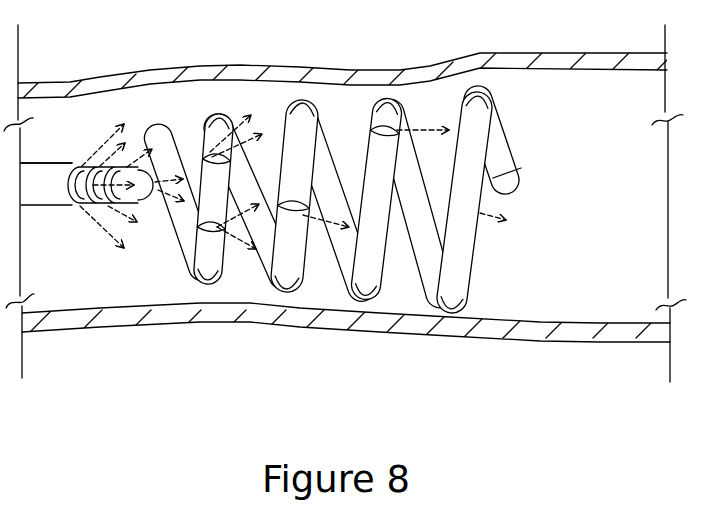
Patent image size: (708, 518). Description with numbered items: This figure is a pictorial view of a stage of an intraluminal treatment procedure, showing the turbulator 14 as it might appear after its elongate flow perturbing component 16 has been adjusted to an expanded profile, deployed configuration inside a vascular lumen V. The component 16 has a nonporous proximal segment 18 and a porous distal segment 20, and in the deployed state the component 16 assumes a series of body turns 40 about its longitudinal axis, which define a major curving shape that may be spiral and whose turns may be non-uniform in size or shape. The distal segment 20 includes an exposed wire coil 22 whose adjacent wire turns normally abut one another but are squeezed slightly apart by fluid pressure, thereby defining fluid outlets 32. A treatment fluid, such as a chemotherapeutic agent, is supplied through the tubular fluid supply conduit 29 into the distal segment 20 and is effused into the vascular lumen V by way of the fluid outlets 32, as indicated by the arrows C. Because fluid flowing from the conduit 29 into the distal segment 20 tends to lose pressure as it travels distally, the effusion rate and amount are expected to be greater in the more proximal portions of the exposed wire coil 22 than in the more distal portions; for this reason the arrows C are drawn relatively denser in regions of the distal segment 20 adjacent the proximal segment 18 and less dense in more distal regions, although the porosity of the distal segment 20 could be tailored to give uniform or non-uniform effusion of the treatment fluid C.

The turbulator 14 is at (178, 109).
The elongate flow perturbing component 16 is at (366, 294).
The nonporous proximal segment 18 is at (42, 208).
The porous distal segment 20 is at (207, 267).
The exposed wire coil 22 is at (451, 305).
The tubular fluid supply conduit 29 is at (44, 162).
The fluid outlet 32 is at (66, 186).
The body turn 40 is at (297, 100).
The vascular lumen V is at (565, 336).
The treatment fluid arrows C is at (100, 142).